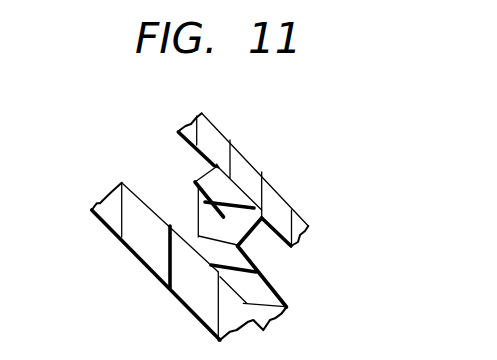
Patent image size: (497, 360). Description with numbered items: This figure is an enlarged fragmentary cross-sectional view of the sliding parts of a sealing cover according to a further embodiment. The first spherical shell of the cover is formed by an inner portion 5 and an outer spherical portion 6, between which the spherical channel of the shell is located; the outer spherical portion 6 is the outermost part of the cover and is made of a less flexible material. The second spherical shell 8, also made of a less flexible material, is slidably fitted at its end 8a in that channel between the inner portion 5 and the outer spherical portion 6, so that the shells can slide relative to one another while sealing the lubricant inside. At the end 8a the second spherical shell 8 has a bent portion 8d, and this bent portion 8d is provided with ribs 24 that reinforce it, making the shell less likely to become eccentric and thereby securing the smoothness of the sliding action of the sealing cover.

The outer spherical portion 6 is at (243, 167).
The bent portion 8d is at (262, 193).
The ribs 24 is at (177, 179).
The second spherical shell 8 is at (270, 293).
The sealing rib 8a is at (193, 261).
The inner portion 5 is at (130, 261).